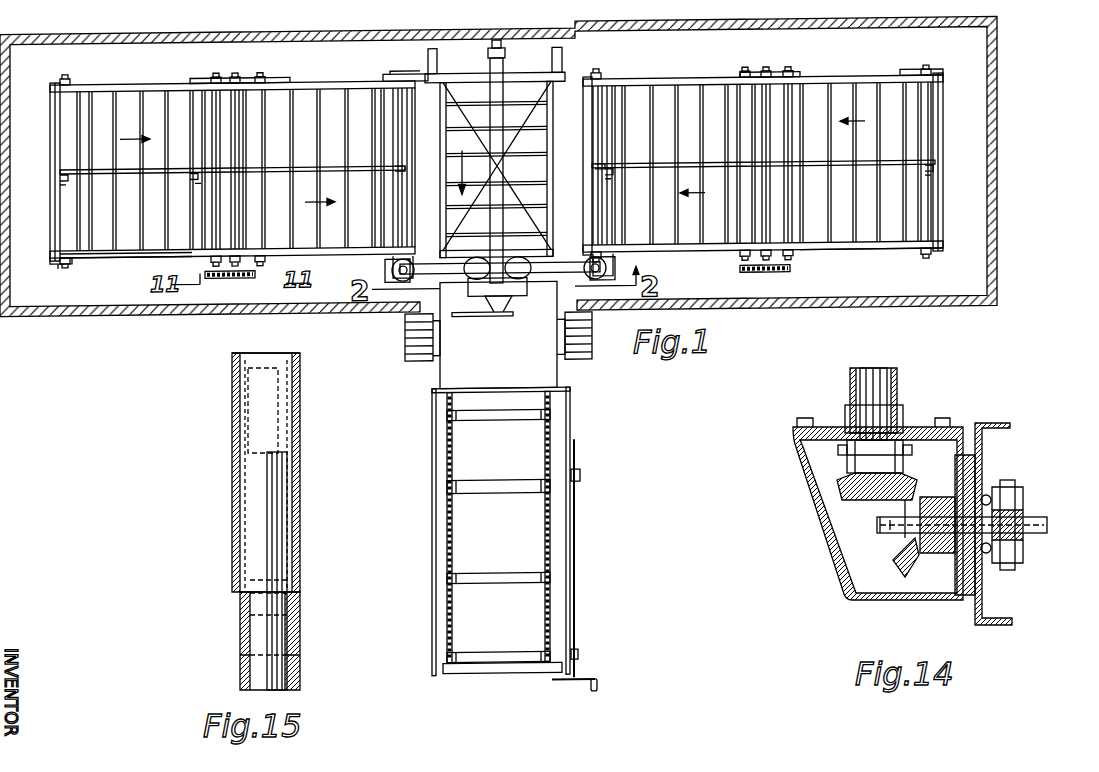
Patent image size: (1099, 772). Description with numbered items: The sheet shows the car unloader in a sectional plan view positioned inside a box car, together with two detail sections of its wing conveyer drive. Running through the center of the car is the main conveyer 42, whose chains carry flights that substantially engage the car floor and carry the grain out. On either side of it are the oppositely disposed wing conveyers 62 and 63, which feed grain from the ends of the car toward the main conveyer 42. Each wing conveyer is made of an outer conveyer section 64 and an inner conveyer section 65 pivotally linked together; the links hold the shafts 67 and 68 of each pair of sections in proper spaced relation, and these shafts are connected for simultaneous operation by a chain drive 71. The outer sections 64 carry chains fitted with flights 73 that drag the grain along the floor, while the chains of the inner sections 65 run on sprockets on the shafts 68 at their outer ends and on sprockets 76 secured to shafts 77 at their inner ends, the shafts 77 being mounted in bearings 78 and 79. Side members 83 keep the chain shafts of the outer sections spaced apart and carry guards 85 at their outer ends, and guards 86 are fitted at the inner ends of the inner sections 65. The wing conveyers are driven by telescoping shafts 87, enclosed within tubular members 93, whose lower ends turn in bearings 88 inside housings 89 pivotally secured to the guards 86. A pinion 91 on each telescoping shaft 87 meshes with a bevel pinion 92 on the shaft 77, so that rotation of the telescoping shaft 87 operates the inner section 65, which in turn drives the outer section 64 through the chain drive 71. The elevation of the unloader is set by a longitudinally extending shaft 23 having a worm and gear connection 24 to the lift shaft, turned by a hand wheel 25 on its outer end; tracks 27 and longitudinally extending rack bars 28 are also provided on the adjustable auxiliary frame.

In FIG. 1, the wing conveyer 62 is at (139, 80).
In FIG. 1, the wing conveyer 63 is at (839, 78).
In FIG. 1, the outer conveyer section 64 is at (127, 232).
In FIG. 1, the inner conveyer section 65 is at (333, 229).
In FIG. 1, the shaft 67 is at (212, 210).
In FIG. 1, the shaft 68 is at (240, 214).
In FIG. 1, the chain drive 71 is at (228, 272).
In FIG. 1, the flight 73 is at (106, 202).
In FIG. 1, the shaft 77 is at (398, 209).
In FIG. 14, the shaft 77 is at (1035, 518).
In FIG. 1, the bearing 79 is at (388, 74).
In FIG. 1, the side member 83 is at (138, 252).
In FIG. 1, the guard 85 is at (56, 256).
In FIG. 1, the main conveyer 42 is at (536, 161).
In FIG. 1, the shaft 23 is at (576, 594).
In FIG. 1, the worm and gear drive connection 24 is at (582, 475).
In FIG. 1, the hand wheel 25 is at (596, 678).
In FIG. 1, the track 27 is at (433, 512).
In FIG. 1, the rack bar 28 is at (445, 445).
In FIG. 14, the guard 86 is at (1005, 423).
In FIG. 14, the telescoping shaft 87 is at (880, 372).
In FIG. 15, the telescoping shaft 87 is at (268, 530).
In FIG. 14, the bearing 88 is at (880, 455).
In FIG. 14, the housing 89 is at (812, 498).
In FIG. 14, the pinion 91 is at (845, 487).
In FIG. 14, the bevel pinion 92 is at (898, 568).
In FIG. 14, the tubular member 93 is at (850, 382).
In FIG. 15, the tubular member 93 is at (300, 503).
In FIG. 14, the sprocket 76 is at (1015, 488).
In FIG. 14, the bearing 78 is at (985, 552).